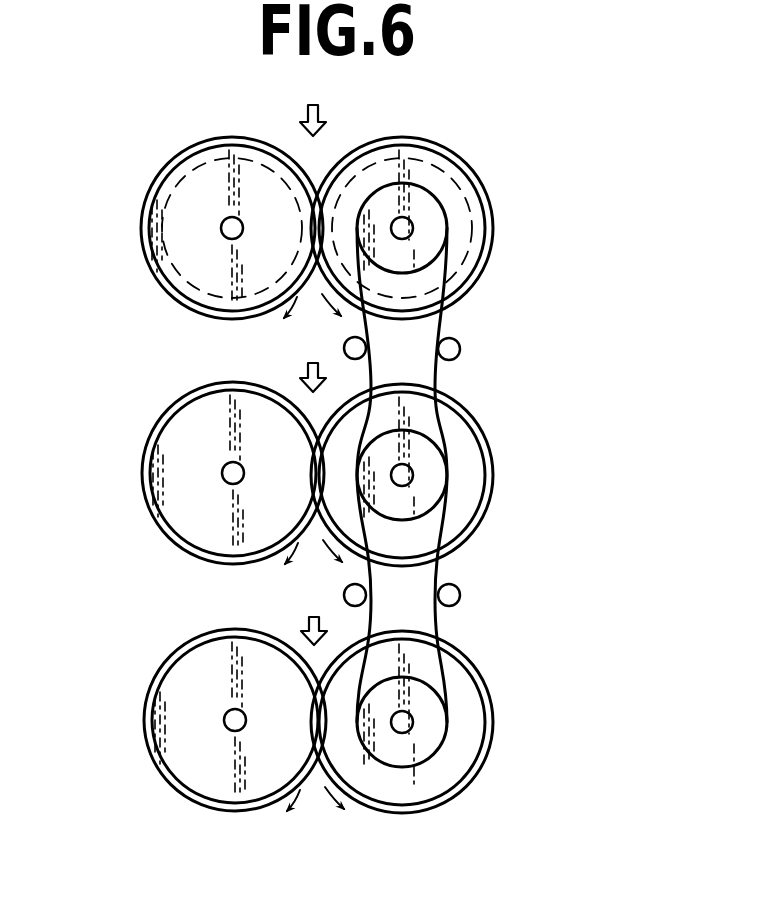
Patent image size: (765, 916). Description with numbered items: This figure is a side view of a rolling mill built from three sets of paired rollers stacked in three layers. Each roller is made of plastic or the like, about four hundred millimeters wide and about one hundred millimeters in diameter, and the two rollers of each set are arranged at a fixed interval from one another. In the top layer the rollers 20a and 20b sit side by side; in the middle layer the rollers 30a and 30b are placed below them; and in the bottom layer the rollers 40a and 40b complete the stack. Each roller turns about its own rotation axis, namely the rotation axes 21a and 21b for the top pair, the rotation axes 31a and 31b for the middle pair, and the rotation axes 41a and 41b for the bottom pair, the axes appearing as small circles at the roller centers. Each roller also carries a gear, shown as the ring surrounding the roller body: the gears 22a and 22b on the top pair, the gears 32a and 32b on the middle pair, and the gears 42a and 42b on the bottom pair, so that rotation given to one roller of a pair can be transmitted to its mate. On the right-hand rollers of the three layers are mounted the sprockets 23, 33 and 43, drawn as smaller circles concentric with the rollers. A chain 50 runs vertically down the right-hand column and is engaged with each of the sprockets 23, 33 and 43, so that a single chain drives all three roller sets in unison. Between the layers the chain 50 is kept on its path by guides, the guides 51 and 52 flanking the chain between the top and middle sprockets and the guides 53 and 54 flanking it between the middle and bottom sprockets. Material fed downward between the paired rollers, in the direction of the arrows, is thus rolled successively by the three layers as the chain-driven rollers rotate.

The roller 20a is at (386, 130).
The roller 20b is at (186, 135).
The rotation axis 21a is at (413, 229).
The rotation axis 21b is at (222, 228).
The gear 22a is at (470, 270).
The gear 22b is at (152, 263).
The sprocket 23 is at (422, 200).
The roller 30a is at (473, 403).
The roller 30b is at (233, 372).
The rotation axis 31a is at (413, 475).
The rotation axis 31b is at (223, 473).
The gear 32a is at (463, 522).
The gear 32b is at (180, 520).
The sprocket 33 is at (429, 462).
The roller 40a is at (477, 652).
The roller 40b is at (182, 592).
The rotation axis 41a is at (413, 722).
The rotation axis 41b is at (225, 721).
The gear 42a is at (455, 772).
The gear 42b is at (190, 768).
The sprocket 43 is at (430, 706).
The chain 50 is at (438, 320).
The guide 51 is at (461, 353).
The guide 52 is at (345, 348).
The guide 53 is at (461, 595).
The guide 54 is at (345, 595).